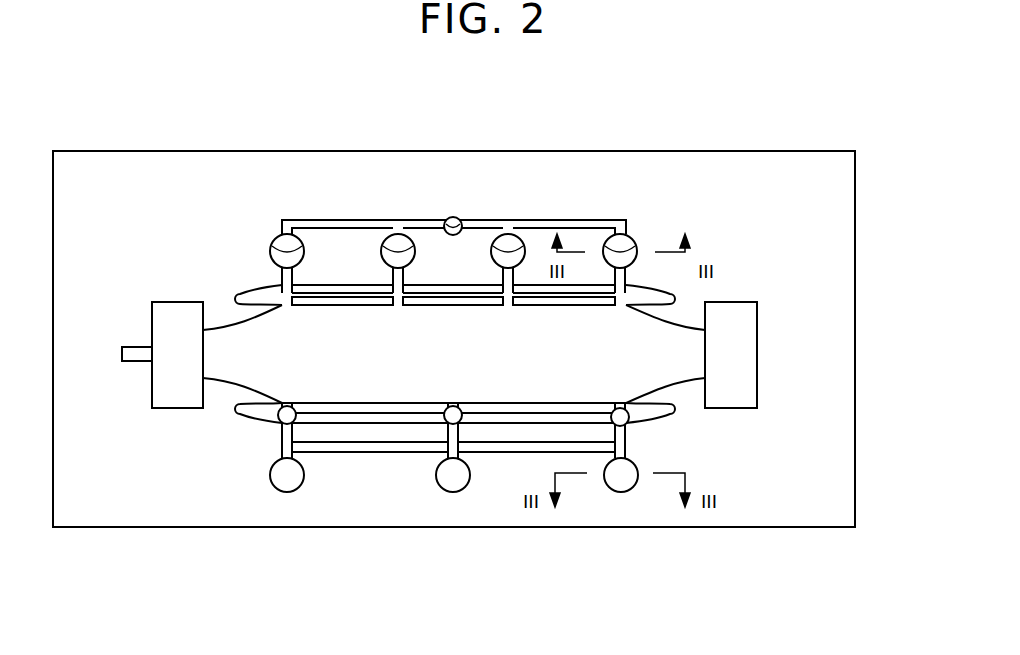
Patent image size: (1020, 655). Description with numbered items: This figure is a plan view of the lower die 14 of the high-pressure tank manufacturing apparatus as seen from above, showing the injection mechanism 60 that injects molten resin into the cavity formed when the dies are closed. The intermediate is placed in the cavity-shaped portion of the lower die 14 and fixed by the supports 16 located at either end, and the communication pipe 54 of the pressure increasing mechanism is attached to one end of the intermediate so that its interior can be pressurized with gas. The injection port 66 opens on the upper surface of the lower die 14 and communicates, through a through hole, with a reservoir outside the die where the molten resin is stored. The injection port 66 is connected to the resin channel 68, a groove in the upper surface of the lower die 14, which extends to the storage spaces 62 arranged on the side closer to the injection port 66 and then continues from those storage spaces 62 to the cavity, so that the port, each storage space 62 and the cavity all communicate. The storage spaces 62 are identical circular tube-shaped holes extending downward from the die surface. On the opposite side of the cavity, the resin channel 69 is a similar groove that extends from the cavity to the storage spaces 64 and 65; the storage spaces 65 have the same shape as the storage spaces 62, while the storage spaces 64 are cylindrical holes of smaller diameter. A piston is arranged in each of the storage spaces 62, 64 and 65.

The lower die 14 is at (800, 175).
The supports 16 is at (181, 315).
The communication pipe 54 is at (140, 347).
The injection mechanism 60 is at (608, 497).
The storage spaces 62 is at (272, 244).
The storage spaces 64 is at (279, 418).
The storage spaces 65 is at (294, 488).
The injection port 66 is at (462, 221).
The resin channel 68 is at (578, 228).
The resin channel 69 is at (629, 457).